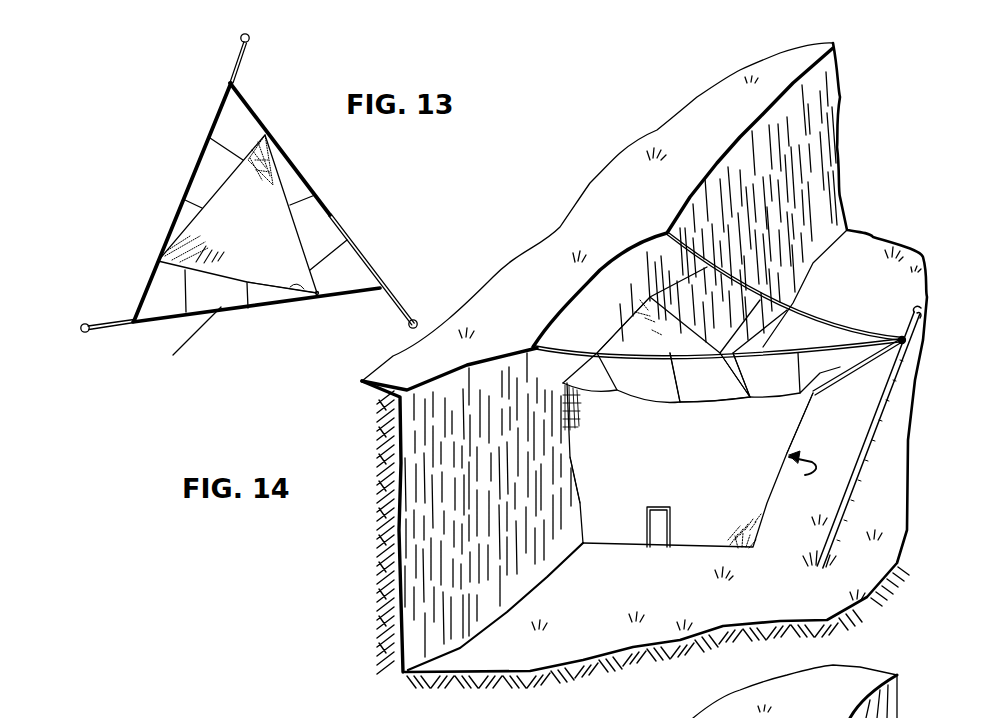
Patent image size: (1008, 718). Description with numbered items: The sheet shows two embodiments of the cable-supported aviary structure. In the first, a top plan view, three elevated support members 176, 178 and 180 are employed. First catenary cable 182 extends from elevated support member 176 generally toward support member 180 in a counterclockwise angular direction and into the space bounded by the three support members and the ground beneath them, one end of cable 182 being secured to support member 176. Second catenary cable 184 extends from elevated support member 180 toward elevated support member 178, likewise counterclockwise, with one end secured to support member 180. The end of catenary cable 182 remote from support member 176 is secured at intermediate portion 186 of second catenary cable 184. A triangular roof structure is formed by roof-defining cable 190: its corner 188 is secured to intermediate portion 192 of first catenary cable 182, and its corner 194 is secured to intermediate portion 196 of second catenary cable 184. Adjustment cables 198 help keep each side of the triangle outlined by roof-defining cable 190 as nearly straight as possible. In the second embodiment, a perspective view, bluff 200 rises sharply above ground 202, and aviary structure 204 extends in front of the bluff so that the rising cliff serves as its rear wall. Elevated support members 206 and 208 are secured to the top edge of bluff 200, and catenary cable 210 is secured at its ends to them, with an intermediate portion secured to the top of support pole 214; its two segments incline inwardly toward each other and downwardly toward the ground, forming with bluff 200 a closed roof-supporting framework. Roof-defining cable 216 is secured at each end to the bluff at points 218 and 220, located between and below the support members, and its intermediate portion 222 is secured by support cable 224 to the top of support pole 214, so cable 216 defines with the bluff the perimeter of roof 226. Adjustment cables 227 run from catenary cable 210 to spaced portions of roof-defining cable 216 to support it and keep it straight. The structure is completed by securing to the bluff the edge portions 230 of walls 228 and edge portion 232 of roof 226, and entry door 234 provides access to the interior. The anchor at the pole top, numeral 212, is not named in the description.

In FIG. 13, the elevated support member 176 is at (251, 41).
In FIG. 13, the elevated support member 178 is at (414, 319).
In FIG. 13, the elevated support member 180 is at (84, 322).
In FIG. 13, the first catenary cable 182 is at (218, 102).
In FIG. 13, the second catenary cable 184 is at (243, 312).
In FIG. 13, the intermediate portion of second catenary cable 186 is at (132, 325).
In FIG. 13, the corner of triangular structure 188 is at (197, 252).
In FIG. 13, the roof-defining cable 190 is at (270, 282).
In FIG. 13, the intermediate portion of first catenary cable 192 is at (157, 254).
In FIG. 13, the corner of triangular structure 194 is at (297, 288).
In FIG. 13, the intermediate portion of second catenary cable 196 is at (319, 298).
In FIG. 13, the adjustment cables 198 is at (205, 156).
In FIG. 14, the bluff 200 is at (480, 481).
In FIG. 14, the ground 202 is at (628, 604).
In FIG. 14, the aviary structure 204 is at (798, 477).
In FIG. 14, the elevated support member 206 is at (536, 346).
In FIG. 14, the elevated support member 208 is at (667, 232).
In FIG. 14, the catenary cable 210 is at (840, 324).
In FIG. 14, the anchor 212 is at (901, 337).
In FIG. 14, the support pole 214 is at (860, 475).
In FIG. 14, the roof-defining cable 216 is at (712, 408).
In FIG. 14, the point 218 is at (560, 390).
In FIG. 14, the point 220 is at (688, 282).
In FIG. 14, the intermediate portion of cable 222 is at (817, 393).
In FIG. 14, the support cable 224 is at (857, 360).
In FIG. 14, the roof 226 is at (622, 332).
In FIG. 14, the adjustment cables 227 is at (748, 303).
In FIG. 14, the walls 228 is at (597, 483).
In FIG. 14, the edge portions of walls 230 is at (568, 452).
In FIG. 14, the edge portion of roof 232 is at (570, 370).
In FIG. 14, the entry door 234 is at (670, 523).